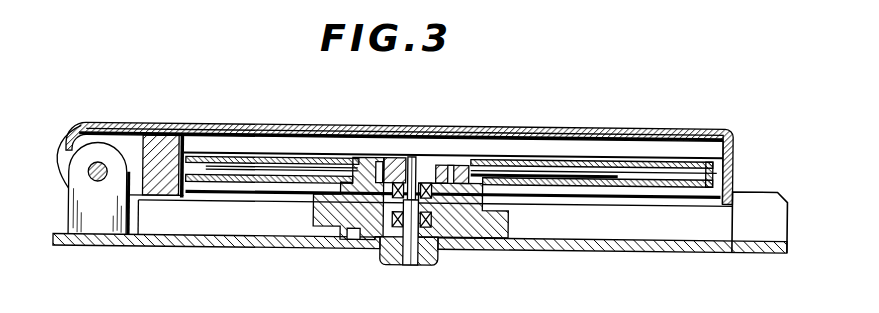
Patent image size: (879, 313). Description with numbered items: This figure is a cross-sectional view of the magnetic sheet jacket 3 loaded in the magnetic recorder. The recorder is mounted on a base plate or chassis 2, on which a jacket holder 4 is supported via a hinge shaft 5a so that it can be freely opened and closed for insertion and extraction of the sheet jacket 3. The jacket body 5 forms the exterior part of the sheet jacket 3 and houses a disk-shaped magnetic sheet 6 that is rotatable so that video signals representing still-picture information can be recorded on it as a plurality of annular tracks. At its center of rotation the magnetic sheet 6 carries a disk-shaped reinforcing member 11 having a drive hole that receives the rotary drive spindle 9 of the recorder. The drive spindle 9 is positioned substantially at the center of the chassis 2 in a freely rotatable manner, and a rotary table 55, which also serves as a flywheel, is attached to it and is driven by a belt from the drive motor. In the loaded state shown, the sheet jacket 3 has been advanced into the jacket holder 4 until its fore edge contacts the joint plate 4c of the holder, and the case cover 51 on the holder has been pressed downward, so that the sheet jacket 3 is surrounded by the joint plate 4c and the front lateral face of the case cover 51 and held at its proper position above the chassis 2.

The base plate or chassis 2 is at (563, 245).
The magnetic sheet jacket 3 is at (648, 190).
The jacket holder 4 is at (657, 133).
The joint plate 4c is at (156, 150).
The jacket body 5 is at (590, 185).
The hinge shaft 5a is at (97, 161).
The magnetic sheet 6 is at (538, 169).
The rotary drive spindle 9 is at (411, 153).
The disk-shaped reinforcing member 11 is at (444, 160).
The case cover 51 is at (621, 122).
The rotary table 55 is at (453, 160).